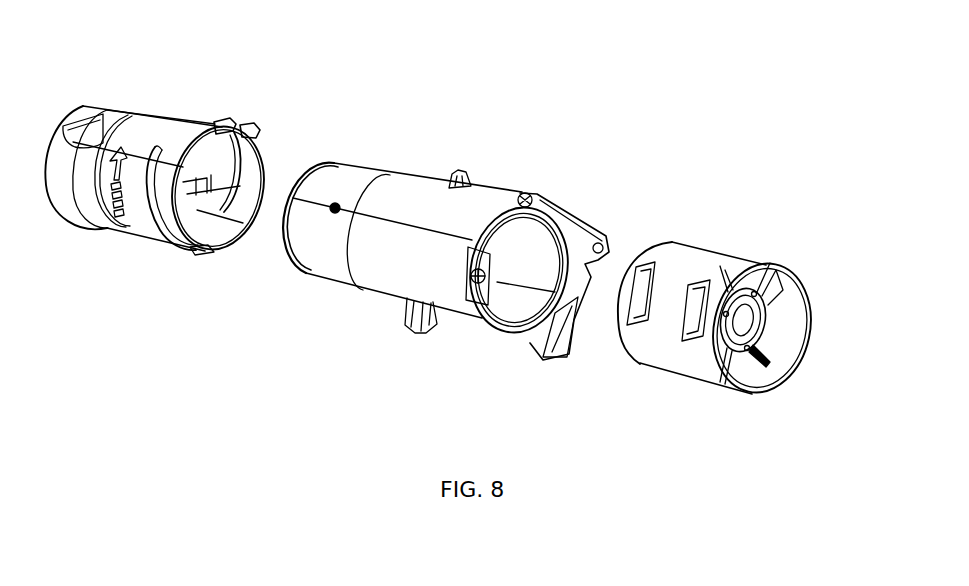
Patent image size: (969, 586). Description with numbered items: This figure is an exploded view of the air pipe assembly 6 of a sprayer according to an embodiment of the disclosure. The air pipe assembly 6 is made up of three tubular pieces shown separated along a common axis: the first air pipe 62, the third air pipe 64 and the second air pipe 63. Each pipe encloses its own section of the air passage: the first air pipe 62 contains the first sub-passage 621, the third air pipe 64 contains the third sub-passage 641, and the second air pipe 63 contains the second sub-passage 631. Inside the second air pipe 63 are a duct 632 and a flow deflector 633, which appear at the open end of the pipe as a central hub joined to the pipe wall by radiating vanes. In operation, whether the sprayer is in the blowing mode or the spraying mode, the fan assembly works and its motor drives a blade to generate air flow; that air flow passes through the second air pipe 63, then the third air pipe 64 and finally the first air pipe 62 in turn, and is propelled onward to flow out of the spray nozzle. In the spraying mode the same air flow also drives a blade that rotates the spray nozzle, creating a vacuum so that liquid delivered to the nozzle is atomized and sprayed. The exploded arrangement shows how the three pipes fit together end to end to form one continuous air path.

The air pipe assembly 6 is at (538, 31).
The first air pipe 62 is at (150, 142).
The first sub-passage 621 is at (200, 183).
The third air pipe 64 is at (417, 212).
The third sub-passage 641 is at (516, 282).
The second air pipe 63 is at (687, 273).
The second sub-passage 631 is at (780, 340).
The duct 632 is at (747, 353).
The flow deflector 633 is at (780, 297).